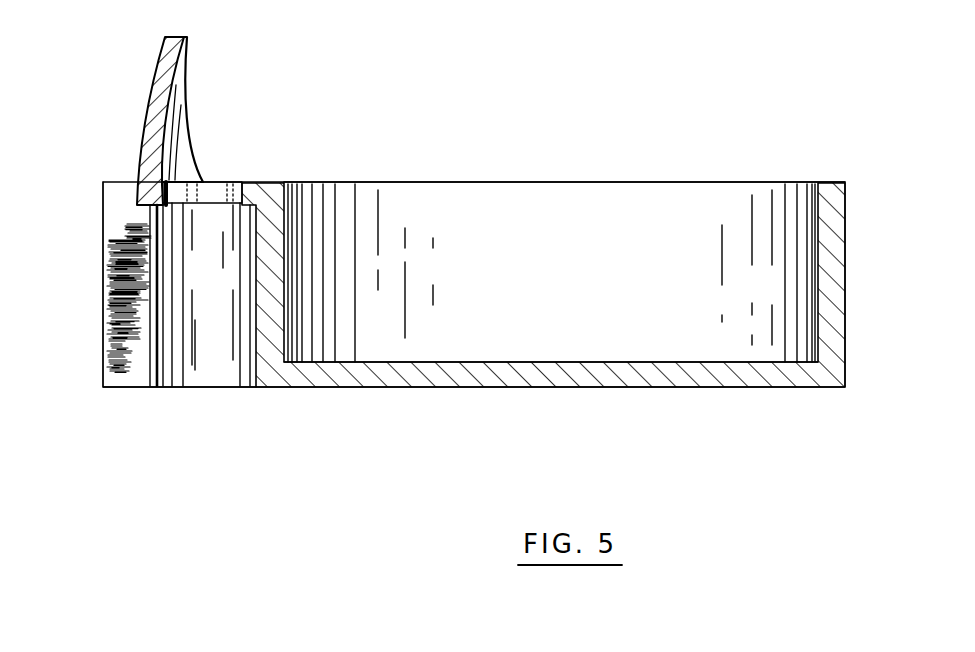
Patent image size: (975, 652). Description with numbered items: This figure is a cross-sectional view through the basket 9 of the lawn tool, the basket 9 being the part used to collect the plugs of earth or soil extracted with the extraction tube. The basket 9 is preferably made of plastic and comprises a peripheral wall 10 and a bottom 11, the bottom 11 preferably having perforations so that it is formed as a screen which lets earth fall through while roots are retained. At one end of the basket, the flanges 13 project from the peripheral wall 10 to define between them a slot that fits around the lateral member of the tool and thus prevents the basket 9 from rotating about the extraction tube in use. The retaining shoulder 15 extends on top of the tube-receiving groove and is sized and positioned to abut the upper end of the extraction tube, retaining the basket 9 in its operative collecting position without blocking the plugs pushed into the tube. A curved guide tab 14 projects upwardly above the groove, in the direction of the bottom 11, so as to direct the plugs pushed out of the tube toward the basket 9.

The basket 9 is at (533, 182).
The peripheral wall 10 is at (493, 311).
The bottom 11 is at (583, 362).
The flanges 13 is at (130, 368).
The curved guide tab 14 is at (183, 162).
The retaining shoulder 15 is at (247, 207).